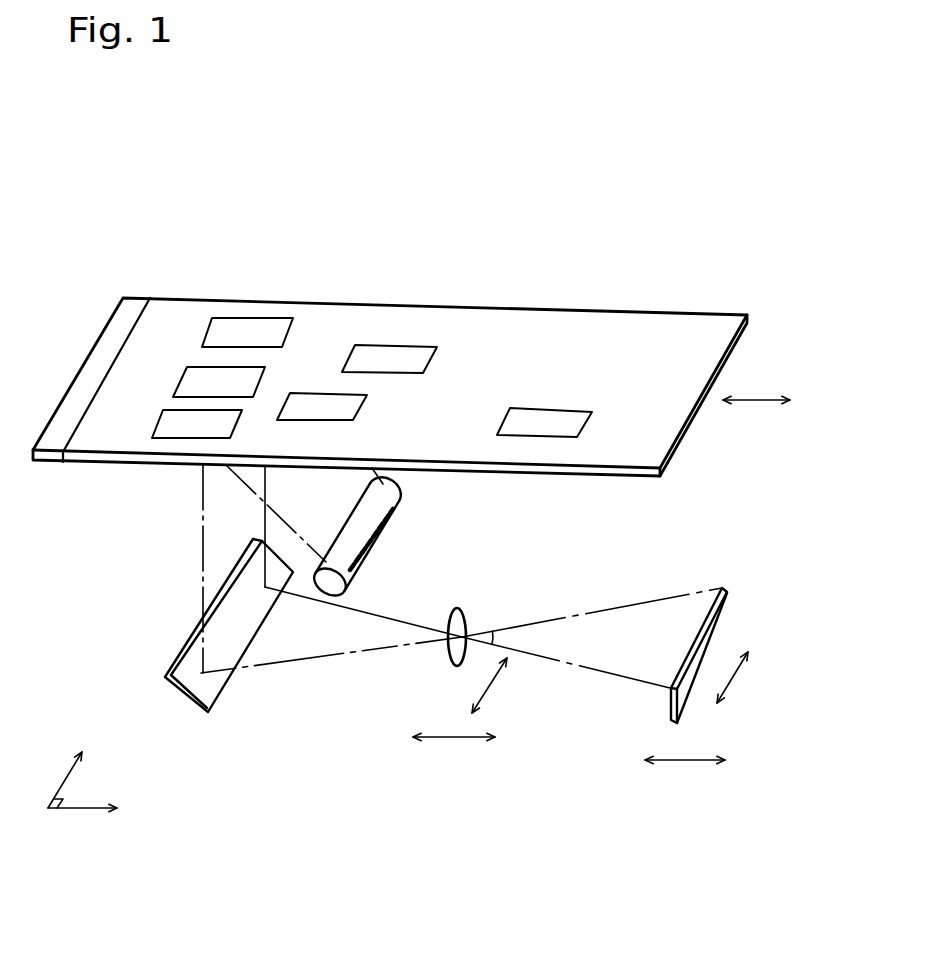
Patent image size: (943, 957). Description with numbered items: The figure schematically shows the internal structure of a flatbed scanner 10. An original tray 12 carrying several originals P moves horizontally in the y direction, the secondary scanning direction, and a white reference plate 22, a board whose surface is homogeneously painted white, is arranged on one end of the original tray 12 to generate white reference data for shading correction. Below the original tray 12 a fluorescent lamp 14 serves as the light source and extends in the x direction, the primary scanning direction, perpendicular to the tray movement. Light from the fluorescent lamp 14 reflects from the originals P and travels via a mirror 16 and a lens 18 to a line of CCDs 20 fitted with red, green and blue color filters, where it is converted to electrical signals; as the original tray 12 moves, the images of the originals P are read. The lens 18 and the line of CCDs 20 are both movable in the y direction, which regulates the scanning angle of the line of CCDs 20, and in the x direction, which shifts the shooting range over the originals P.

The flatbed scanner 10 is at (503, 221).
The original tray 12 is at (685, 332).
The white reference plate 22 is at (120, 318).
The originals P is at (180, 382).
The fluorescent lamp 14 is at (400, 502).
The mirror 16 is at (170, 667).
The lens 18 is at (450, 660).
The line of CCDs 20 is at (712, 628).